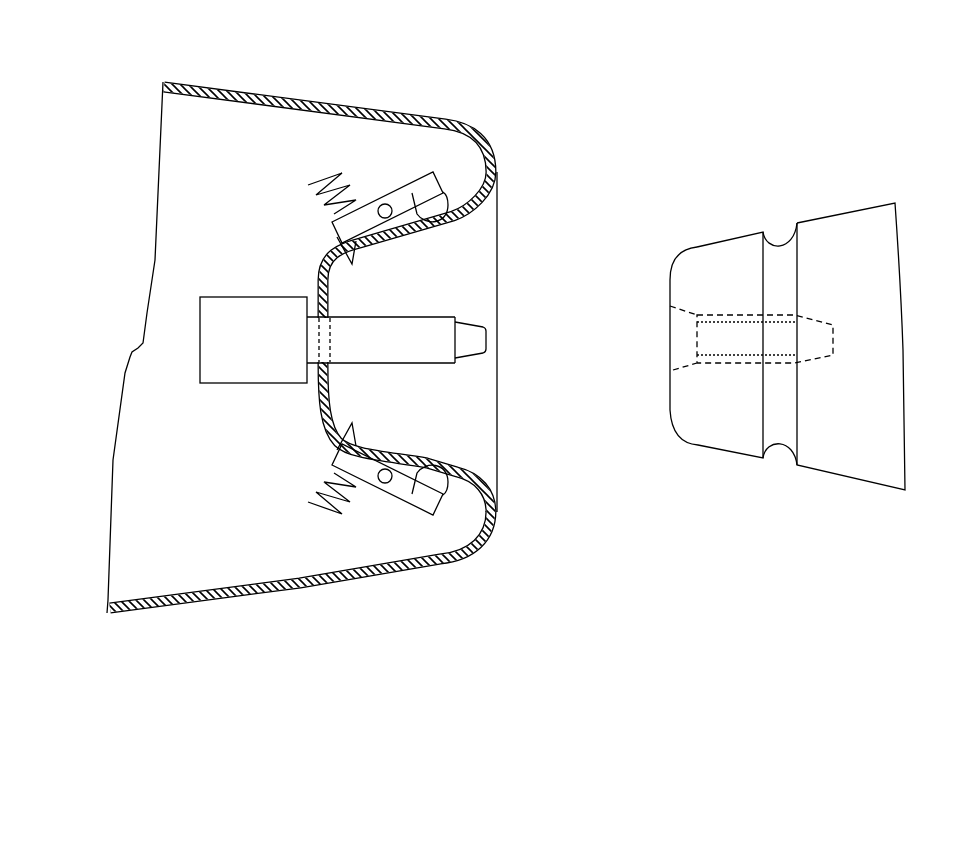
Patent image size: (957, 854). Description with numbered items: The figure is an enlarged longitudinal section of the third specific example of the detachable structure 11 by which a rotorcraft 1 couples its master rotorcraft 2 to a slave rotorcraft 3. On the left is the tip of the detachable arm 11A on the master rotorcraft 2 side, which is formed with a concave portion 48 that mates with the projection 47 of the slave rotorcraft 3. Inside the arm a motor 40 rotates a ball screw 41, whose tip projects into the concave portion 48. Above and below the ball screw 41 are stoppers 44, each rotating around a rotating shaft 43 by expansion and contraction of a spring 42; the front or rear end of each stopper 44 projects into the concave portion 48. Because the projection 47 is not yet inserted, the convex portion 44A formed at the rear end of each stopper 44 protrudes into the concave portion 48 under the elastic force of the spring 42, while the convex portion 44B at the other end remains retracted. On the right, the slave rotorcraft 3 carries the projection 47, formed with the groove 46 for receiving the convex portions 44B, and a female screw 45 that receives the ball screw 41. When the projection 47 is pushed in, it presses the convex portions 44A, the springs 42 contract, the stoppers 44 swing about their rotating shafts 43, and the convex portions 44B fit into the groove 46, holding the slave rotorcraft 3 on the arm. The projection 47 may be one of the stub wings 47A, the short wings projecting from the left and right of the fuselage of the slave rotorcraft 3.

The rotorcraft 1 is at (518, 50).
The master rotorcraft 2 is at (496, 118).
The slave rotorcraft 3 is at (710, 197).
The detachable structure 11 is at (564, 579).
The detachable arm 11A is at (327, 588).
The motor 40 is at (200, 328).
The ball screw 41 is at (430, 363).
The spring 42 is at (320, 200).
The rotating shaft 43 is at (387, 204).
The stopper 44 is at (340, 230).
The convex portion 44A is at (353, 257).
The convex portion 44B is at (437, 217).
The female screw 45 is at (727, 363).
The groove 46 is at (780, 458).
The projection 47 is at (697, 446).
The stub wing 47A is at (695, 268).
The concave portion 48 is at (473, 393).